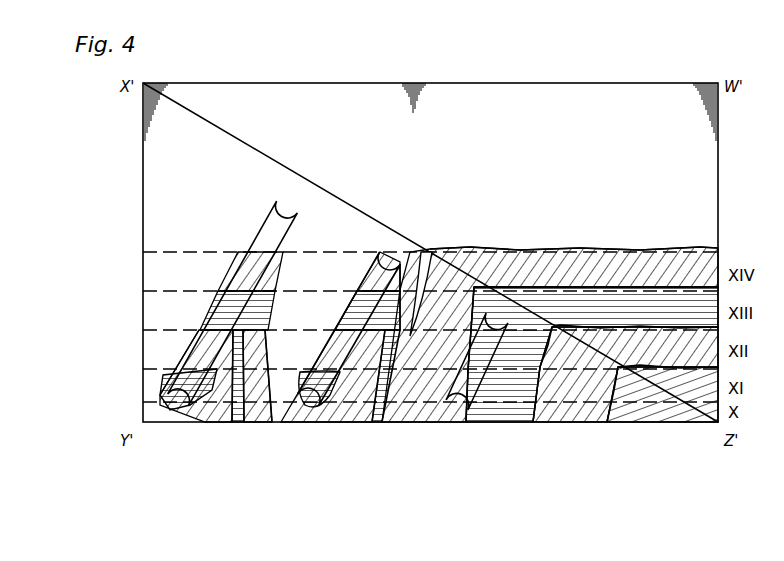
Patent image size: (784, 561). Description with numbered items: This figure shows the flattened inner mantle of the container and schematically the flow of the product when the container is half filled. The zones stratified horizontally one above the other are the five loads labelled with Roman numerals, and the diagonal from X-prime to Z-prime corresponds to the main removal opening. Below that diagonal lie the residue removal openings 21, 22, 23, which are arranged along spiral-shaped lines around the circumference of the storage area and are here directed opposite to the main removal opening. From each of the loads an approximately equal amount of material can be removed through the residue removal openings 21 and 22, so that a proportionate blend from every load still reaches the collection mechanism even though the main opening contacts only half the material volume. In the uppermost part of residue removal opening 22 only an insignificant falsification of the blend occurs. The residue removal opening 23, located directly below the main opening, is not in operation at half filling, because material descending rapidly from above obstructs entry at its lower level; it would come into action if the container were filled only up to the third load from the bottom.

The residue removal opening 21 is at (205, 347).
The residue removal opening 22 is at (332, 347).
The residue removal opening 23 is at (468, 388).